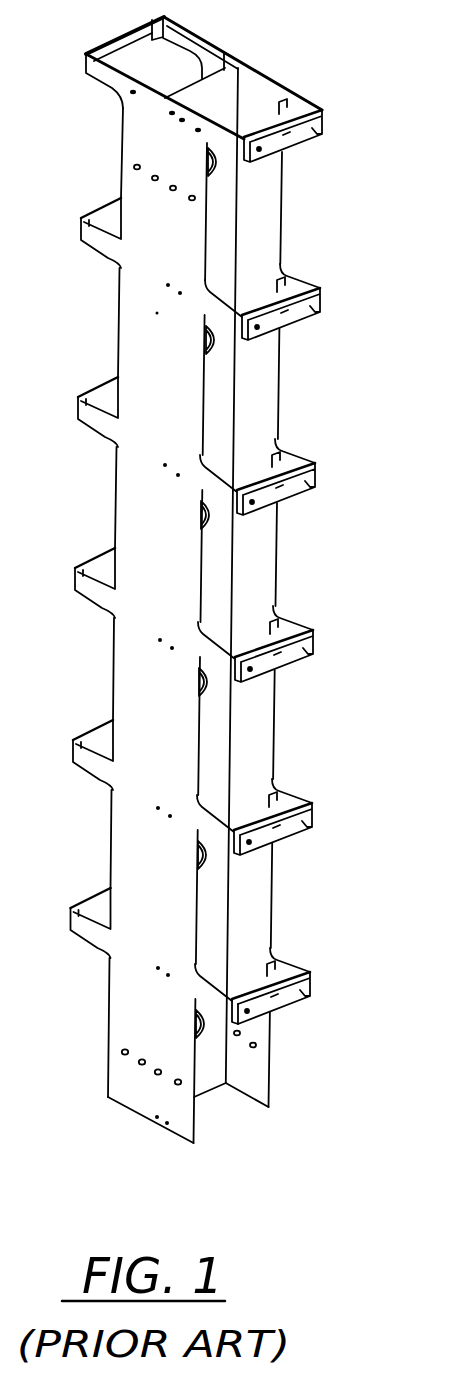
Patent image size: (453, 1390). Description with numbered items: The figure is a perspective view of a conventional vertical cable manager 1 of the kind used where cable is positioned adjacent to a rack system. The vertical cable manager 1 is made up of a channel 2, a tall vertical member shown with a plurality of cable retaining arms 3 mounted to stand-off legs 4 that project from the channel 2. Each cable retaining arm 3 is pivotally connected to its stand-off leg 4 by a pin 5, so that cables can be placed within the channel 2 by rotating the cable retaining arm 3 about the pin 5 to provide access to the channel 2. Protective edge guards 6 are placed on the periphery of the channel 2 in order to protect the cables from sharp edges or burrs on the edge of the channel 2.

The vertical cable manager 1 is at (362, 1166).
The channel 2 is at (253, 1088).
The cable retaining arm 3 is at (288, 997).
The stand-off leg 4 is at (276, 950).
The pin 5 is at (248, 1008).
The protective edge guard 6 is at (273, 542).